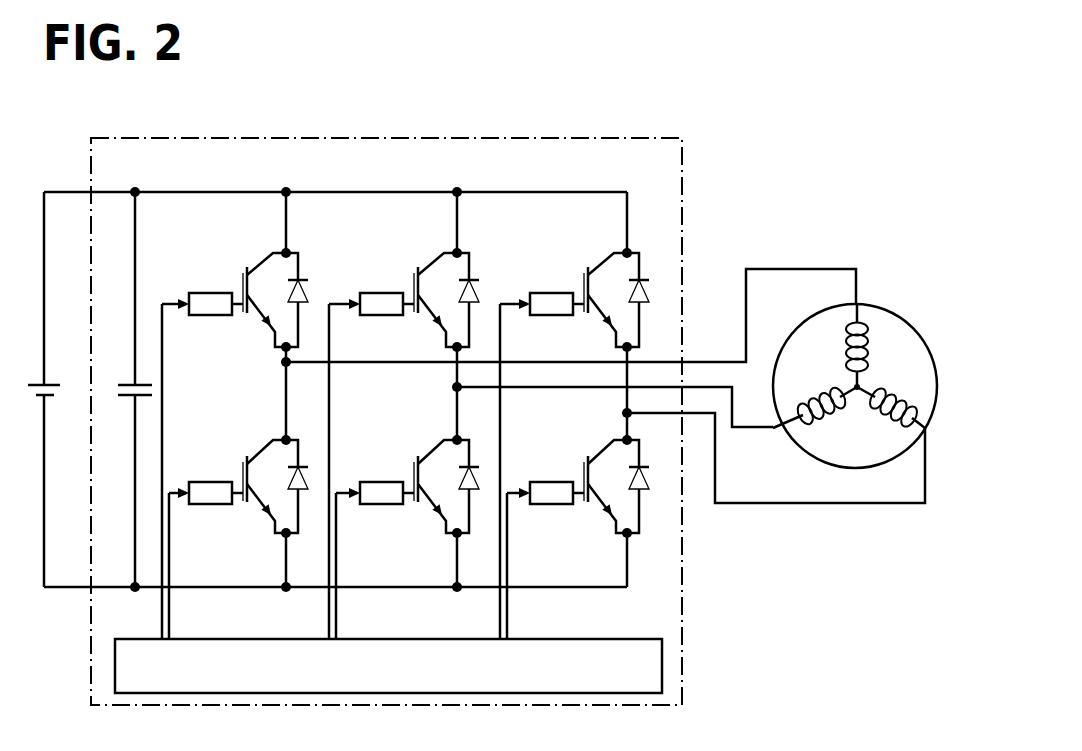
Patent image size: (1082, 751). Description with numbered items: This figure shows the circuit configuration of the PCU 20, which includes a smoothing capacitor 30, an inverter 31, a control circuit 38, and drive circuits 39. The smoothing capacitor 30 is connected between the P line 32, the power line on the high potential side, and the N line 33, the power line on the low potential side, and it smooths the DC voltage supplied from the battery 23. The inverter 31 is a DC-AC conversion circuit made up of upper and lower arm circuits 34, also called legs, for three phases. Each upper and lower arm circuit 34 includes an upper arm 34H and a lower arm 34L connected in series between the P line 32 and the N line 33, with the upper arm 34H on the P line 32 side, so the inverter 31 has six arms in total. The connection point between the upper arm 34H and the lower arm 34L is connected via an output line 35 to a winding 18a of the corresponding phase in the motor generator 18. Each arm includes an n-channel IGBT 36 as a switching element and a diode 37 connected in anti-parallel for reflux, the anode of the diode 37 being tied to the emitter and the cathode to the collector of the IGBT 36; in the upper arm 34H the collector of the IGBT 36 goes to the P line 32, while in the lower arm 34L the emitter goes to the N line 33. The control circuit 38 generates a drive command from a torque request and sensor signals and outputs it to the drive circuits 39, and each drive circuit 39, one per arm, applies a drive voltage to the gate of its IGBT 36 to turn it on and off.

The motor generator 18 is at (912, 320).
The winding 18a is at (843, 348).
The PCU 20 is at (682, 165).
The battery 23 is at (52, 383).
The smoothing capacitor 30 is at (128, 383).
The inverter 31 is at (243, 206).
The P line 32 is at (370, 192).
The N line 33 is at (372, 587).
The upper and lower arm circuit 34 is at (290, 176).
The upper arm 34H is at (678, 258).
The lower arm 34L is at (665, 508).
The output line 35 is at (672, 361).
The IGBT 36 is at (243, 276).
The diode 37 is at (308, 285).
The control circuit 38 is at (662, 640).
The drive circuit 39 is at (189, 293).